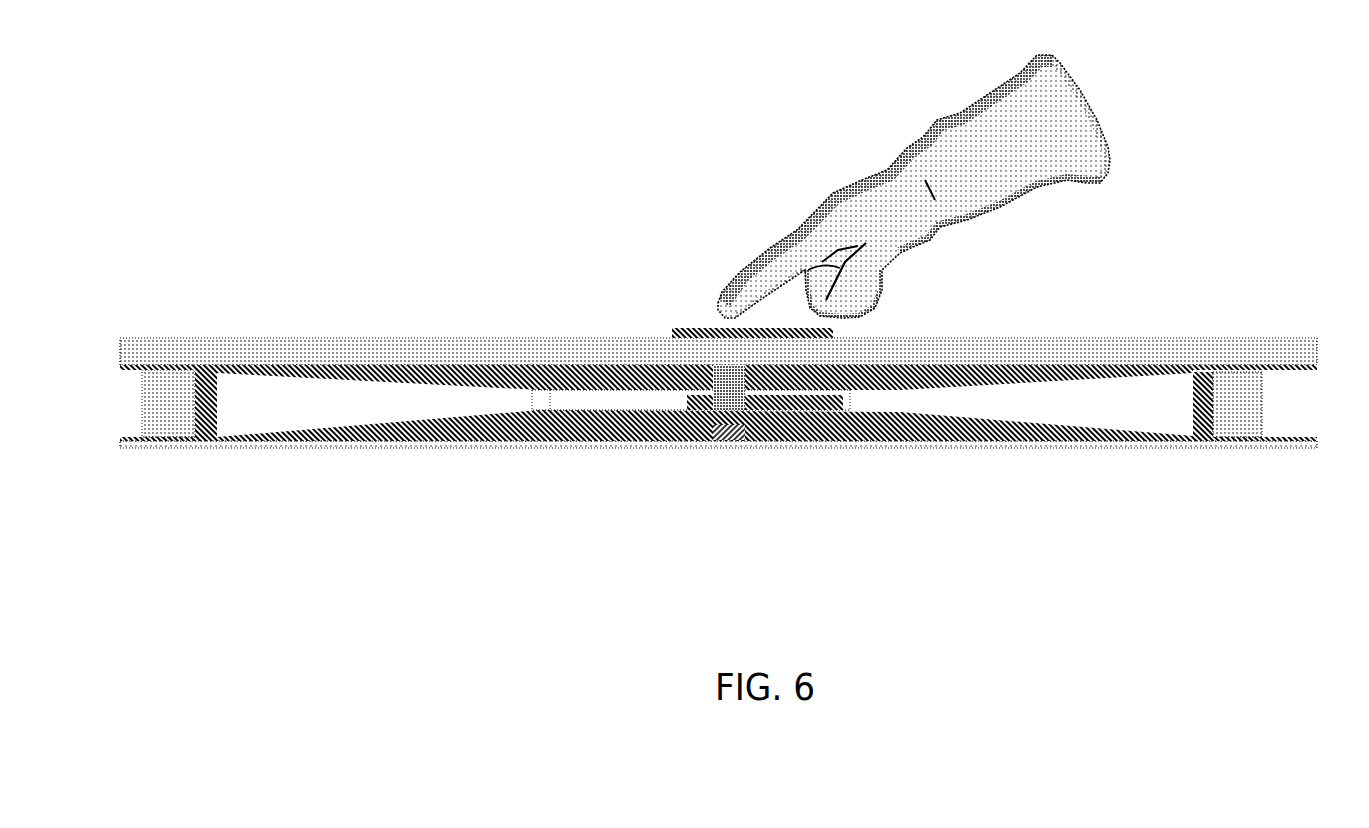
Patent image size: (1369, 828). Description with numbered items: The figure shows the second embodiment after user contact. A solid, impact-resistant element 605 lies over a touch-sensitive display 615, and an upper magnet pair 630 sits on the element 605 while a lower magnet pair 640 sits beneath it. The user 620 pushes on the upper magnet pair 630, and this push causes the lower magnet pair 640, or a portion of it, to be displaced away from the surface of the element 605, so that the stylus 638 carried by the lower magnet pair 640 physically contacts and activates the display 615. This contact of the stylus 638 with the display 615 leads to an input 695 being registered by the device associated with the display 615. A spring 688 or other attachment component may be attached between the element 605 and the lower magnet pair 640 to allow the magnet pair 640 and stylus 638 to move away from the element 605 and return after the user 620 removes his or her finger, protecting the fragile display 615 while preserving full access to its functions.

The element 605 is at (213, 352).
The display 615 is at (213, 448).
The user 620 is at (787, 223).
The upper magnet pair 630 is at (665, 318).
The stylus 638 is at (713, 410).
The lower magnet pair 640 is at (787, 413).
The spring 688 is at (745, 383).
The input 695 is at (727, 437).